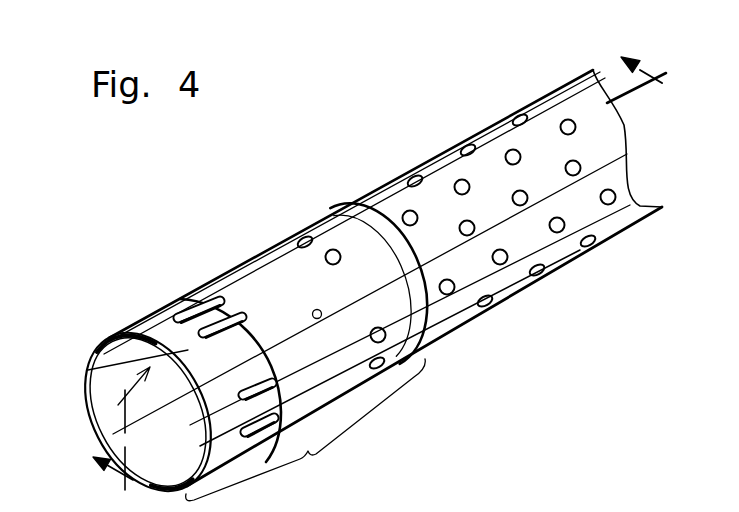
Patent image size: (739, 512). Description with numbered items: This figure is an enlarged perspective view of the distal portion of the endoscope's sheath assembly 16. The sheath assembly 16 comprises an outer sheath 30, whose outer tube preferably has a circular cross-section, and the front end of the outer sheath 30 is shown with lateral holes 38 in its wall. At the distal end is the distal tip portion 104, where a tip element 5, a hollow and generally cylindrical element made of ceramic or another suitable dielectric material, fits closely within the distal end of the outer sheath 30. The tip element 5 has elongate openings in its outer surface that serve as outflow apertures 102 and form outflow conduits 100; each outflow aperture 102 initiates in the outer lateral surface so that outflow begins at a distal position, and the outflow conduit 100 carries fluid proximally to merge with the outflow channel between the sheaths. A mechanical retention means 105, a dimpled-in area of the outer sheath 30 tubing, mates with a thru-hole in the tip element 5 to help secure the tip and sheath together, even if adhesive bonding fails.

The tip element 5 is at (86, 378).
The sheath assembly 16 is at (481, 137).
The outer sheath 30 is at (132, 330).
The lateral holes 38 is at (512, 150).
The outflow conduit 100 is at (270, 380).
The outflow aperture 102 is at (211, 323).
The distal tip portion 104 is at (306, 430).
The mechanical retention means 105 is at (316, 311).